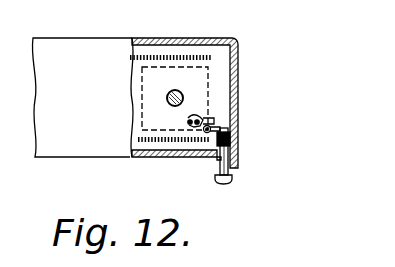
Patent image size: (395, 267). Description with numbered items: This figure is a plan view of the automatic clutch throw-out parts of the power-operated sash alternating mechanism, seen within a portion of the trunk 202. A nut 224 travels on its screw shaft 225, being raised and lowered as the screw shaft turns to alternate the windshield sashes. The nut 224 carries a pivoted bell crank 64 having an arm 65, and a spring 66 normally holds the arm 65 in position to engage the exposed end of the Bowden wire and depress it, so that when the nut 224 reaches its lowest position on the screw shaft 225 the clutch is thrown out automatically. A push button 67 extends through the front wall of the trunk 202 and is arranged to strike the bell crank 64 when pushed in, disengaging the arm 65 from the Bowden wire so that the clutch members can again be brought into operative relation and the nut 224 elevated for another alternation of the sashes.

The trunk 202 is at (238, 44).
The nut 224 is at (208, 67).
The screw shaft 225 is at (167, 98).
The spring 66 is at (189, 121).
The arm 65 is at (208, 110).
The bell crank 64 is at (210, 122).
The push button 67 is at (231, 183).